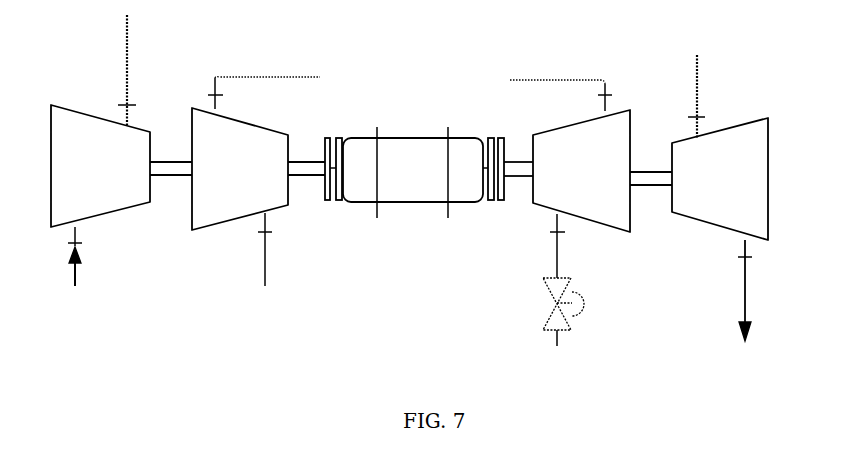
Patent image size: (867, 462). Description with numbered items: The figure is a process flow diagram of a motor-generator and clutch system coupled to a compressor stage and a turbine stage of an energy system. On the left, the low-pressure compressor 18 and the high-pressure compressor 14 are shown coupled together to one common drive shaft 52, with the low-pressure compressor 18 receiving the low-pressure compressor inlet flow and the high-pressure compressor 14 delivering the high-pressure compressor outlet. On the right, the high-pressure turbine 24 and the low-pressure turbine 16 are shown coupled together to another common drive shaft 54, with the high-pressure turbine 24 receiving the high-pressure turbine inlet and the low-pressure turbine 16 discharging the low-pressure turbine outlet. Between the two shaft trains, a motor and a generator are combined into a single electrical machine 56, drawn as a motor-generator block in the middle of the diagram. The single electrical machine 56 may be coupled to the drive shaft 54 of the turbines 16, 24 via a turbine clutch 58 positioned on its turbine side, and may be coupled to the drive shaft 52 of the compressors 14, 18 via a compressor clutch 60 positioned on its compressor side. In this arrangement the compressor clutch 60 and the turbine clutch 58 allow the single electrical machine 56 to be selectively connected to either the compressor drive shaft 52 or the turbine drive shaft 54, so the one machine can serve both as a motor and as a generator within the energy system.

The high-pressure compressor 14 is at (246, 186).
The low-pressure turbine 16 is at (726, 188).
The low-pressure compressor 18 is at (109, 178).
The high-pressure turbine 24 is at (589, 186).
The common drive shaft 52 is at (178, 155).
The common drive shaft 54 is at (645, 168).
The single electrical machine 56 is at (425, 180).
The turbine clutch 58 is at (505, 200).
The compressor clutch 60 is at (327, 200).